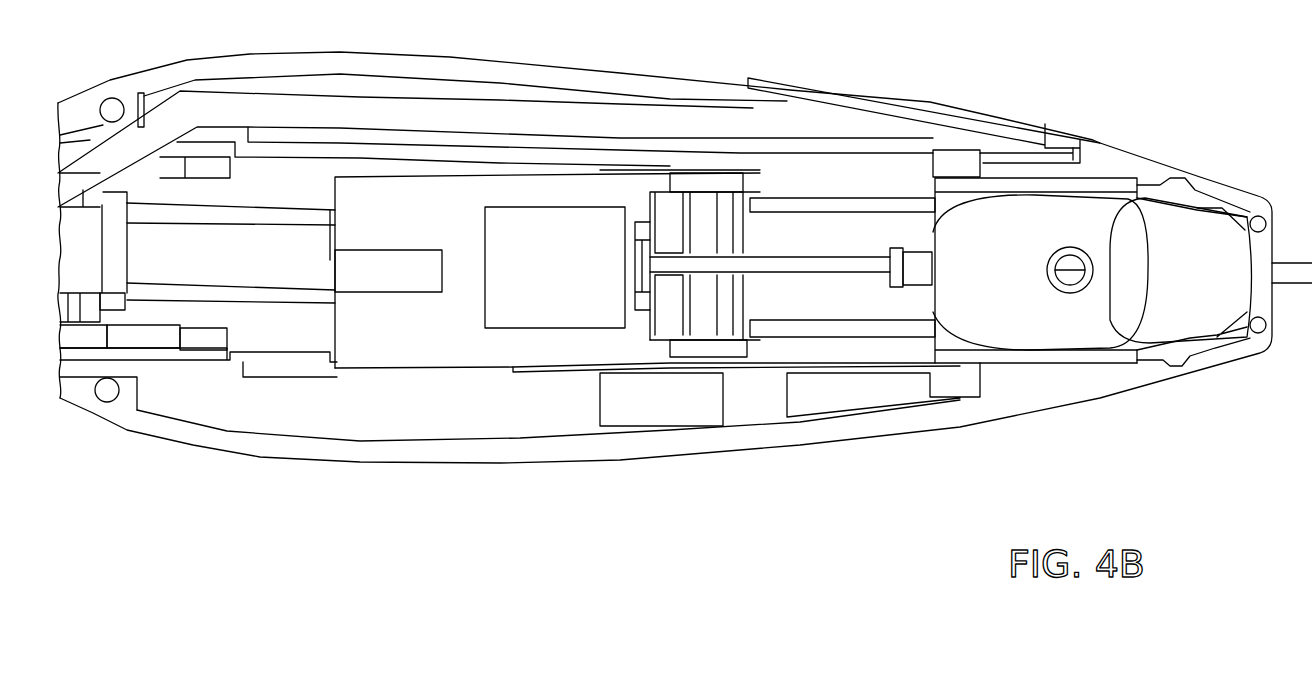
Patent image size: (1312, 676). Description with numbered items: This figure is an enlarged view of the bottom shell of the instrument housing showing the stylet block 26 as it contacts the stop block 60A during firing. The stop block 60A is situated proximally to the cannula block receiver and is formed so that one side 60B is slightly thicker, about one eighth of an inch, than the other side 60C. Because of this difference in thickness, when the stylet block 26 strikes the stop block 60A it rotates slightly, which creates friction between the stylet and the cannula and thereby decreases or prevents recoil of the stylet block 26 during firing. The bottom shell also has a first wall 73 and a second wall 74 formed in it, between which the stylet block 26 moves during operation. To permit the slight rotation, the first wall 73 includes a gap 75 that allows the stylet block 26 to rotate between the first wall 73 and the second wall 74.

The second wall 74 is at (462, 157).
The stylet block 26 is at (437, 210).
The thicker side of stop block 60B is at (670, 203).
The stop block 60A is at (667, 232).
The thinner side of stop block 60C is at (665, 317).
The gap 75 is at (450, 370).
The first wall 73 is at (607, 373).